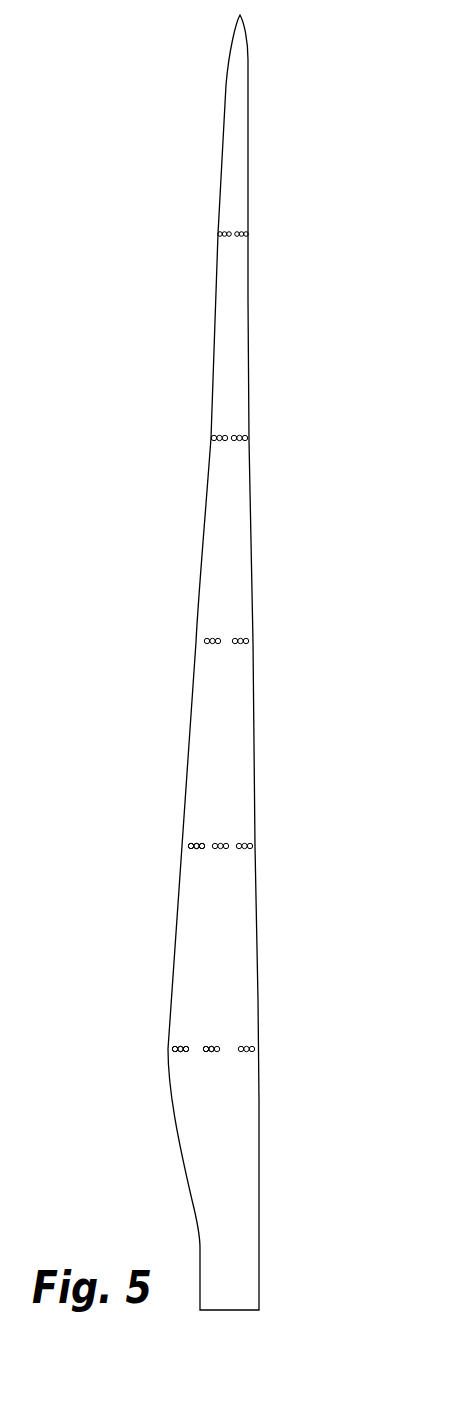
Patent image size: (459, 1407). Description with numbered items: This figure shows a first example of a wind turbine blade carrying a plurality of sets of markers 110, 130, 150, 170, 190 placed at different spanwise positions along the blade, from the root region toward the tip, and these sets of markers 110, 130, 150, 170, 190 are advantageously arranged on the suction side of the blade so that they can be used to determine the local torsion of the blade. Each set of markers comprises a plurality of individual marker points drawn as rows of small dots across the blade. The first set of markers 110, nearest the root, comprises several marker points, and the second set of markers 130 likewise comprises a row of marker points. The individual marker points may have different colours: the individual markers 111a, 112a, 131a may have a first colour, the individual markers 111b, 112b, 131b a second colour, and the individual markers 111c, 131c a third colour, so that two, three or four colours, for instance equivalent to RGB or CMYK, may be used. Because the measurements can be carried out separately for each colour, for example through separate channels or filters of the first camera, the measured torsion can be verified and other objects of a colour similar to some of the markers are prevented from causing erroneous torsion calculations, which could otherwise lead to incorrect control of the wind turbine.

The first set of markers 110 is at (120, 1039).
The individual marker 111a is at (176, 1046).
The individual marker 111b is at (180, 1046).
The individual marker 111c is at (186, 1046).
The individual marker 112a is at (206, 1046).
The individual marker 112b is at (212, 1046).
The second set of markers 130 is at (118, 844).
The individual marker 131a is at (191, 843).
The individual marker 131b is at (195, 844).
The individual marker 131c is at (200, 845).
The set of markers 150 is at (165, 650).
The set of markers 170 is at (173, 441).
The set of markers 190 is at (190, 233).